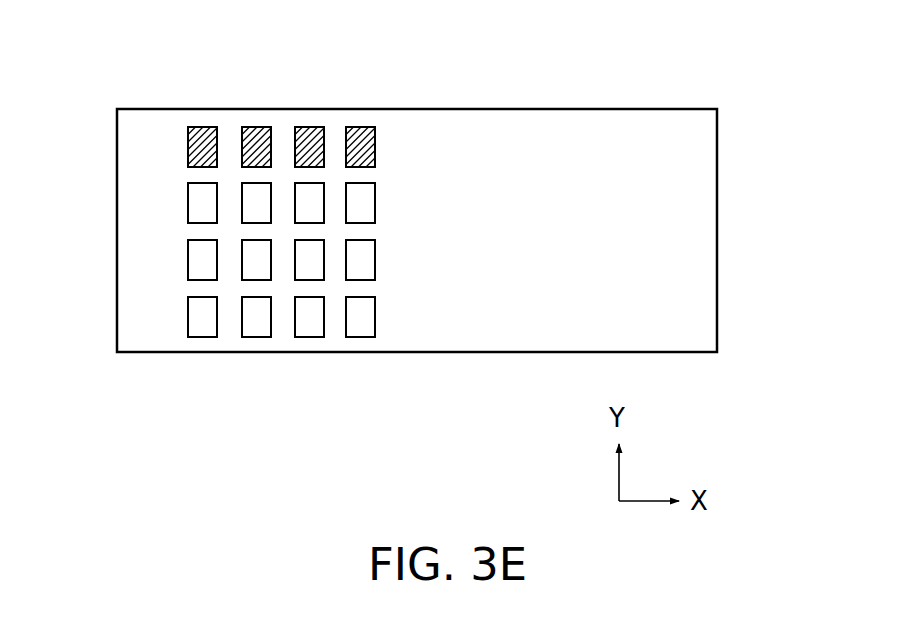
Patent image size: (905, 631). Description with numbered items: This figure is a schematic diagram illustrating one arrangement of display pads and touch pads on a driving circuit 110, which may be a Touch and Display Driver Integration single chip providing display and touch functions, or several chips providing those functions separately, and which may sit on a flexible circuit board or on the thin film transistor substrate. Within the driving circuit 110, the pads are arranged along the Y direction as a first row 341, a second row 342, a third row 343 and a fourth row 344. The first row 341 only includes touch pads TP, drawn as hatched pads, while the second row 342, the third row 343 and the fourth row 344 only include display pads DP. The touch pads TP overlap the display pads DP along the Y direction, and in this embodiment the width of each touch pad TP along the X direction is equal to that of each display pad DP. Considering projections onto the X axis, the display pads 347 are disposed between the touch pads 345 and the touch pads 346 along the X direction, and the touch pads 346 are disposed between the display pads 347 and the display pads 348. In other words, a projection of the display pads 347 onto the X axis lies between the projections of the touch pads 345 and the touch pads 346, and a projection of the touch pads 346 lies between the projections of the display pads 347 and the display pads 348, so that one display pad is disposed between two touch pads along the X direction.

The driving circuit 110 is at (717, 222).
The first row 341 is at (164, 147).
The second row 342 is at (164, 202).
The third row 343 is at (164, 257).
The fourth row 344 is at (164, 312).
The touch pads 345 is at (187, 147).
The touch pads 346 is at (316, 167).
The display pads 347 is at (242, 205).
The display pads 348 is at (358, 223).
The touch pads TP is at (353, 127).
The display pads DP is at (392, 185).